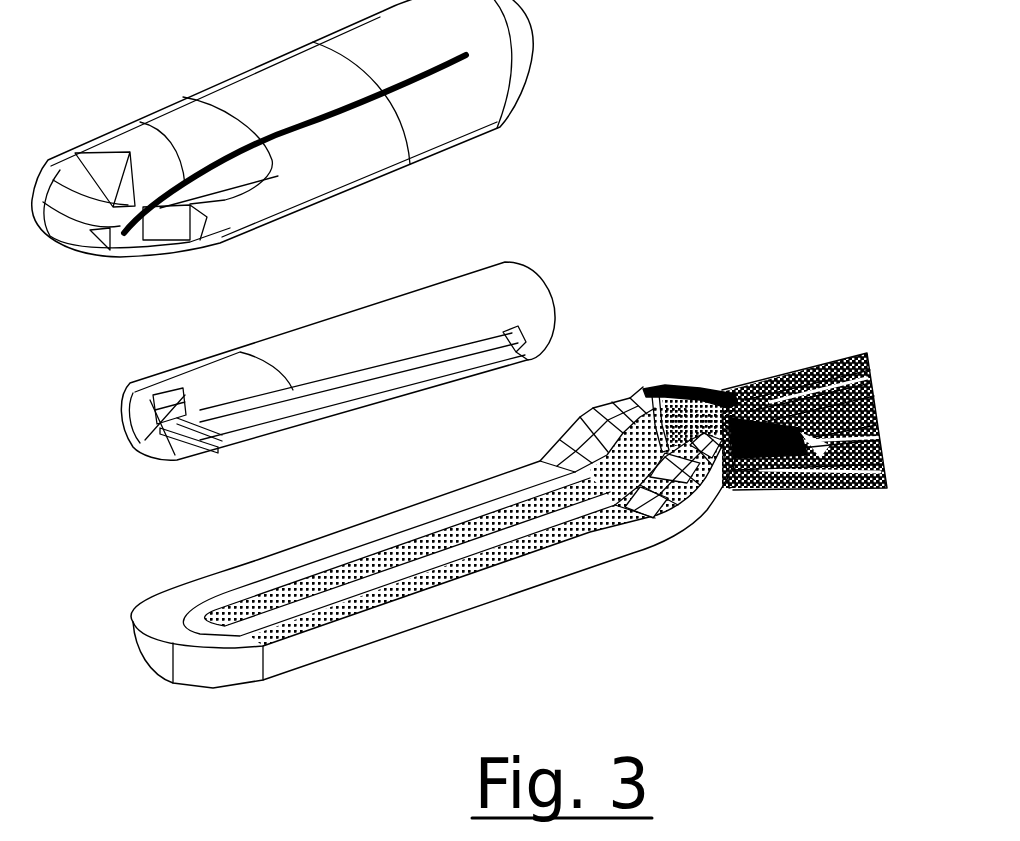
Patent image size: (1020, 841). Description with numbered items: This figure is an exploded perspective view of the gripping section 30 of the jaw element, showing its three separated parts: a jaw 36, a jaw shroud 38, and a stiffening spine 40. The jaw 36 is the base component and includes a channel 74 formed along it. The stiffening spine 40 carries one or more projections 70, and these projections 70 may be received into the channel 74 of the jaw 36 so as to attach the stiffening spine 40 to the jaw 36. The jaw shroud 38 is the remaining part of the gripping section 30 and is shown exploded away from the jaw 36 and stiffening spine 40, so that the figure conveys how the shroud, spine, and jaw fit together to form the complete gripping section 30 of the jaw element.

The gripping section 30 is at (663, 149).
The jaw 36 is at (212, 688).
The jaw shroud 38 is at (240, 99).
The stiffening spine 40 is at (358, 323).
The projections 70 is at (143, 445).
The channel 74 is at (317, 597).